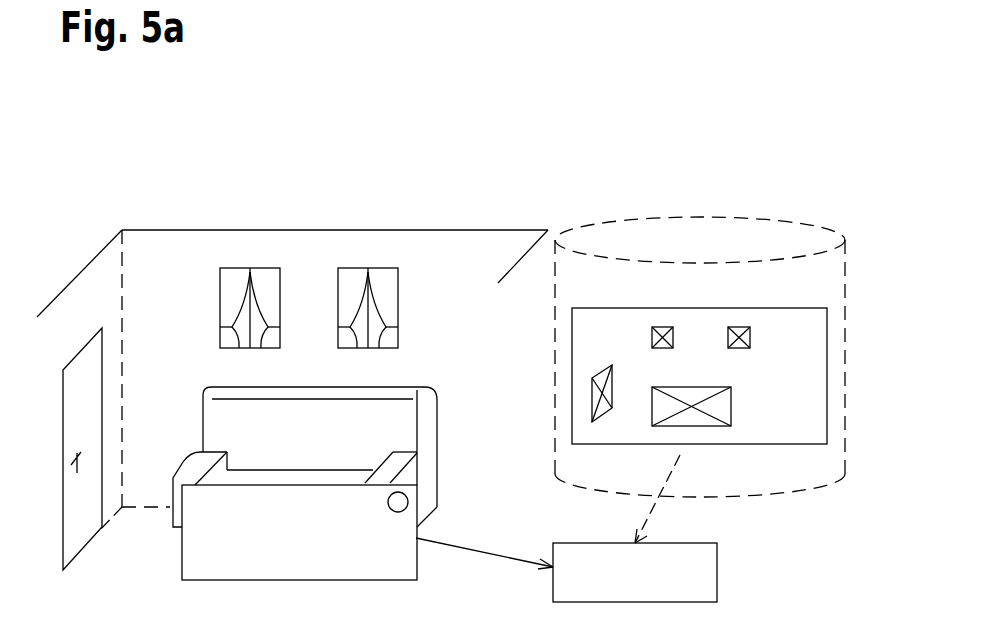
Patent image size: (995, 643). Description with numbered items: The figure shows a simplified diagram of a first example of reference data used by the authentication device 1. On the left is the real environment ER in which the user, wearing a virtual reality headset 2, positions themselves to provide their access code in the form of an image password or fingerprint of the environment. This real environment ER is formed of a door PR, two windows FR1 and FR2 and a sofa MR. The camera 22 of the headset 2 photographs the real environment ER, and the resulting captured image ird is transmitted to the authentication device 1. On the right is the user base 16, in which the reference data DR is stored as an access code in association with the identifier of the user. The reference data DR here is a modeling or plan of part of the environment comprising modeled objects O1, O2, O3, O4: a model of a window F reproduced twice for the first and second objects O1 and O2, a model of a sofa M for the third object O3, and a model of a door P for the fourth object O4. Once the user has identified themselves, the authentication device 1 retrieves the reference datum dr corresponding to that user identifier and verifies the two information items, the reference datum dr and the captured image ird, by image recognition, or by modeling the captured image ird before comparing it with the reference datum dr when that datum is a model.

The authentication device 1 is at (644, 584).
The virtual reality headset 2 is at (328, 470).
The camera 22 is at (408, 500).
The user base 16 is at (711, 249).
The real environment ER is at (182, 272).
The door PR is at (95, 327).
The first window FR1 is at (270, 268).
The second window FR2 is at (385, 268).
The sofa MR is at (388, 394).
The reference data DR is at (755, 308).
The first object O1 is at (662, 349).
The second object O2 is at (739, 349).
The third object O3 is at (731, 405).
The fourth object O4 is at (608, 365).
The captured image ird is at (484, 547).
The reference datum corresponding to the user dr is at (687, 499).